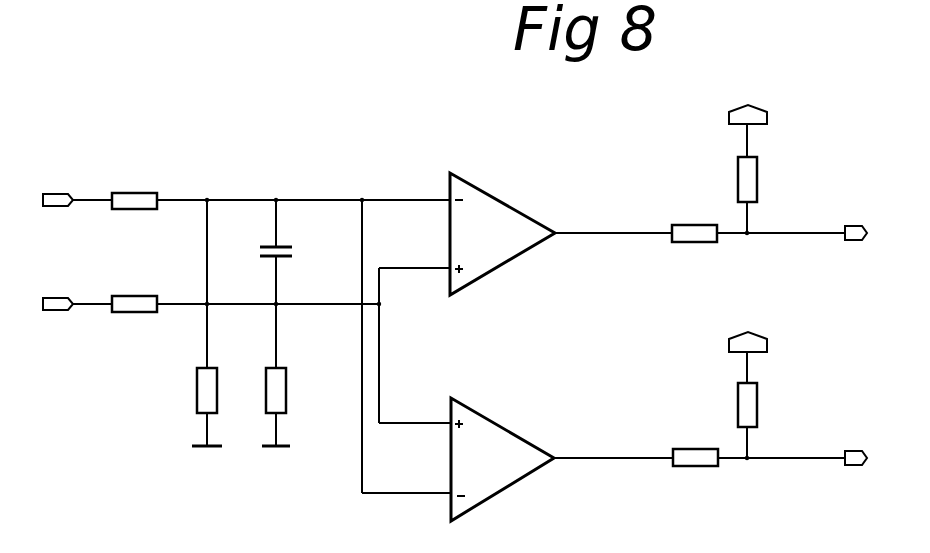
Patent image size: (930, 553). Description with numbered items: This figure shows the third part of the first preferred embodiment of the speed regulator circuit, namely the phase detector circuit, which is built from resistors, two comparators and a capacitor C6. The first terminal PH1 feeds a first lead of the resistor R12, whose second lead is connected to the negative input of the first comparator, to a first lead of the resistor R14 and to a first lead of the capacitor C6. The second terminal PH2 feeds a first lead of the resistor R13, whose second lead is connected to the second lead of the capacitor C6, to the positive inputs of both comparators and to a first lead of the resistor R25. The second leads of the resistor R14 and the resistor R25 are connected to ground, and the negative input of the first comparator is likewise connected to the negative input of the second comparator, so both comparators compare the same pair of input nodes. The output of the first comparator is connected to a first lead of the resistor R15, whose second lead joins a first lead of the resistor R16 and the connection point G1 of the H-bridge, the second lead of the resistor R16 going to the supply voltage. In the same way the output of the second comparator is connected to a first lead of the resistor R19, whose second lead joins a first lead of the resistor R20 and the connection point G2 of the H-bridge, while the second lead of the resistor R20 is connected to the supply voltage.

The first terminal PH1 is at (77, 200).
The second terminal PH2 is at (77, 304).
The connection point G1 is at (792, 233).
The connection point G2 is at (792, 458).
The resistor R12 is at (281, 183).
The resistor R13 is at (245, 286).
The resistor R14 is at (228, 415).
The resistor R25 is at (297, 415).
The capacitor C6 is at (296, 262).
The resistor R15 is at (696, 215).
The resistor R16 is at (768, 169).
The resistor R19 is at (696, 440).
The resistor R20 is at (768, 395).